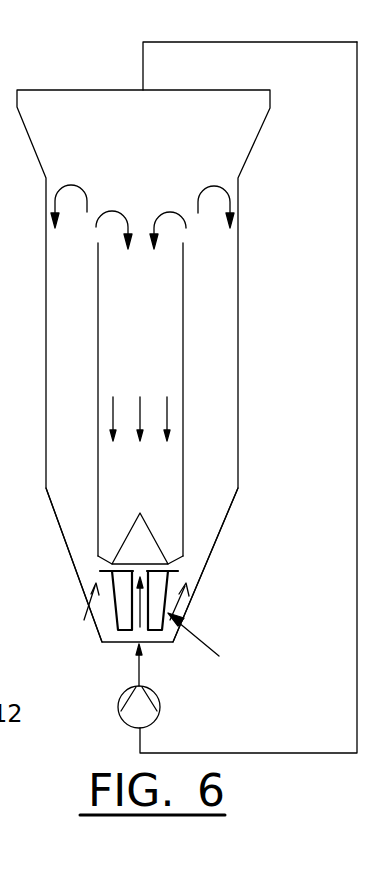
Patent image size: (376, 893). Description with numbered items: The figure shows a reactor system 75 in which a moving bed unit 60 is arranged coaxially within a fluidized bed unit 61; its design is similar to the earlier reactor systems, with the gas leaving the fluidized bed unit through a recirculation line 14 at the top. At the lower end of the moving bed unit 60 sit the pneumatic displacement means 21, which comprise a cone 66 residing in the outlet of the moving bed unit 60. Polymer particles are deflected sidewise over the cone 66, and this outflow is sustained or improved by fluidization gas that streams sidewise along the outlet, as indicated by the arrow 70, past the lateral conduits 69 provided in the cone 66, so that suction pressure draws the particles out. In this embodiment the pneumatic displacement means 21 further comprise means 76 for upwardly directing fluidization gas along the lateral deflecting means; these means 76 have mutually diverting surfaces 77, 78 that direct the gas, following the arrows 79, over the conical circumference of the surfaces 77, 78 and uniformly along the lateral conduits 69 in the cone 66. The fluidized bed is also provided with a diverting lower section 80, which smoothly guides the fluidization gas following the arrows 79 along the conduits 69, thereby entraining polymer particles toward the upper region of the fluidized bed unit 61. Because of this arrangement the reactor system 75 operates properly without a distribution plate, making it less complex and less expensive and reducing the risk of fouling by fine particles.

The recirculation line 14 is at (182, 42).
The reactor system 75 is at (224, 80).
The moving bed unit 60 is at (183, 352).
The fluidized bed unit 61 is at (238, 405).
The cone 66 is at (147, 565).
The lateral conduits 69 is at (147, 571).
The pneumatic displacement means 21 is at (100, 530).
The arrow 70 is at (172, 576).
The diverting lower section 80 is at (68, 555).
The arrows 79 is at (86, 618).
The means for upwardly directing fluidization gas 76 is at (207, 650).
The diverting surface 78 is at (168, 616).
The diverting surface 77 is at (118, 610).